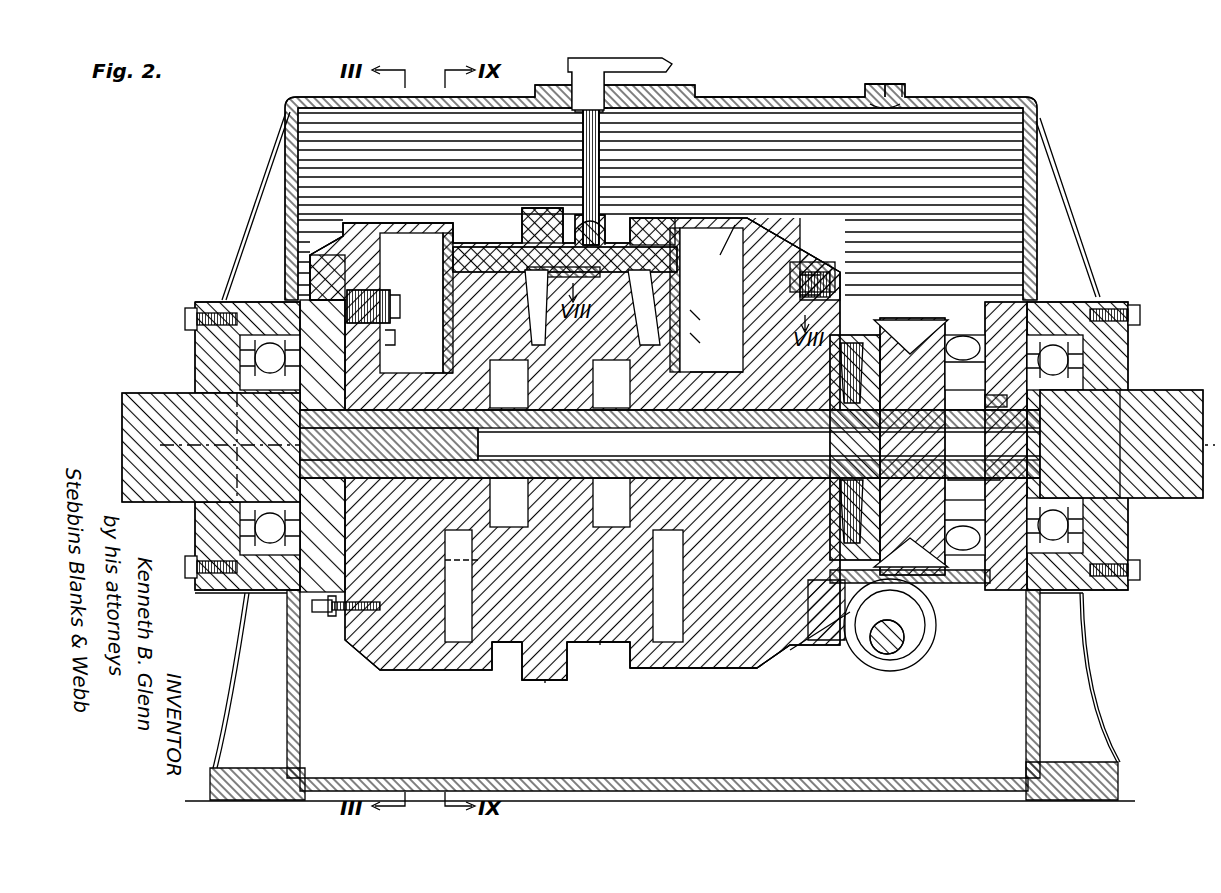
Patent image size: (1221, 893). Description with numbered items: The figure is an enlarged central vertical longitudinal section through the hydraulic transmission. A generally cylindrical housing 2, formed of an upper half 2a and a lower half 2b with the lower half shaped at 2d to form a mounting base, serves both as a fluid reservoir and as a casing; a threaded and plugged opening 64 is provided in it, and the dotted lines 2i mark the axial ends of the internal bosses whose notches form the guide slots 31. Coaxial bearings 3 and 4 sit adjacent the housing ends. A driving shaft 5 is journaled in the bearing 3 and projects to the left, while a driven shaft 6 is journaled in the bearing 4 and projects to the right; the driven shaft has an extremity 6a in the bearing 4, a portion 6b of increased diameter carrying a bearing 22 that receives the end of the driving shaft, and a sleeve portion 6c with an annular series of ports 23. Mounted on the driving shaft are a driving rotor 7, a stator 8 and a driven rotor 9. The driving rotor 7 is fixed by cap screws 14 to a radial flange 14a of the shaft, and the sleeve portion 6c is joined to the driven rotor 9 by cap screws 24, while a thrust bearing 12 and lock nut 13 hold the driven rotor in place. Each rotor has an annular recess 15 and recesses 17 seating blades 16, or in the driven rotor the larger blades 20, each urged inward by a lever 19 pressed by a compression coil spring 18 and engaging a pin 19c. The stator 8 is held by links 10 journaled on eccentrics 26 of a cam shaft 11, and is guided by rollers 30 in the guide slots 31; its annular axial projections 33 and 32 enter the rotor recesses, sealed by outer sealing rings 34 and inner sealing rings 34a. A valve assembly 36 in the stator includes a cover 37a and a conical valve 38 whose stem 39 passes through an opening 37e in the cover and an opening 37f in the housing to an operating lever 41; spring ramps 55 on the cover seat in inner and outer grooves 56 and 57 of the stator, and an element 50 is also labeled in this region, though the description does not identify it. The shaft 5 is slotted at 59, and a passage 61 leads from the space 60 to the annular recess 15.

The housing 2 is at (1020, 100).
The upper half 2a is at (765, 98).
The lower half 2b is at (1060, 690).
The base 2d is at (1095, 775).
The dotted lines 2i is at (598, 657).
The bearing 3 is at (248, 310).
The bearing 4 is at (1080, 330).
The driving shaft 5 is at (140, 432).
The driven shaft 6 is at (1172, 480).
The extremity 6a is at (1060, 430).
The portion of increased diameter 6b is at (1005, 580).
The sleeve portion 6c is at (960, 335).
The driving rotor 7 is at (400, 650).
The stator 8 is at (548, 680).
The driven rotor 9 is at (745, 668).
The links 10 is at (830, 635).
The cam shaft 11 is at (880, 650).
The thrust bearing 12 is at (858, 335).
The lock nut 13 is at (912, 320).
The cap screws 14 is at (325, 615).
The radial flange 14a is at (332, 618).
The annular recess 15 is at (438, 650).
The pumping or driving blades 16 is at (430, 235).
The recesses 17 is at (392, 235).
The compression coil spring 18 is at (820, 255).
The lever 19 is at (392, 300).
The pin 19c is at (815, 207).
The blades 20 is at (735, 232).
The bearing 22 is at (987, 400).
The ports 23 is at (975, 340).
The cap screws 24 is at (815, 268).
The eccentrics 26 is at (915, 640).
The rollers 30 is at (611, 384).
The guide slots 31 is at (509, 384).
The annular axial projection 32 is at (660, 670).
The annular axial projection 33 is at (475, 660).
The outer sealing ring 34 is at (505, 670).
The inner sealing ring 34a is at (600, 645).
The valve assembly 36 is at (660, 245).
The cover 37a is at (505, 245).
The opening 37e is at (635, 240).
The opening 37f is at (652, 105).
The valve 38 is at (706, 336).
The stem 39 is at (600, 190).
The operating lever 41 is at (618, 58).
The ring 50 is at (716, 360).
The spring ramps 55 is at (443, 255).
The inner grooves 56 is at (404, 335).
The outer grooves 57 is at (712, 275).
The slot 59 is at (965, 465).
The space 60 is at (440, 368).
The passage 61 is at (564, 586).
The threaded and plugged opening 64 is at (905, 97).